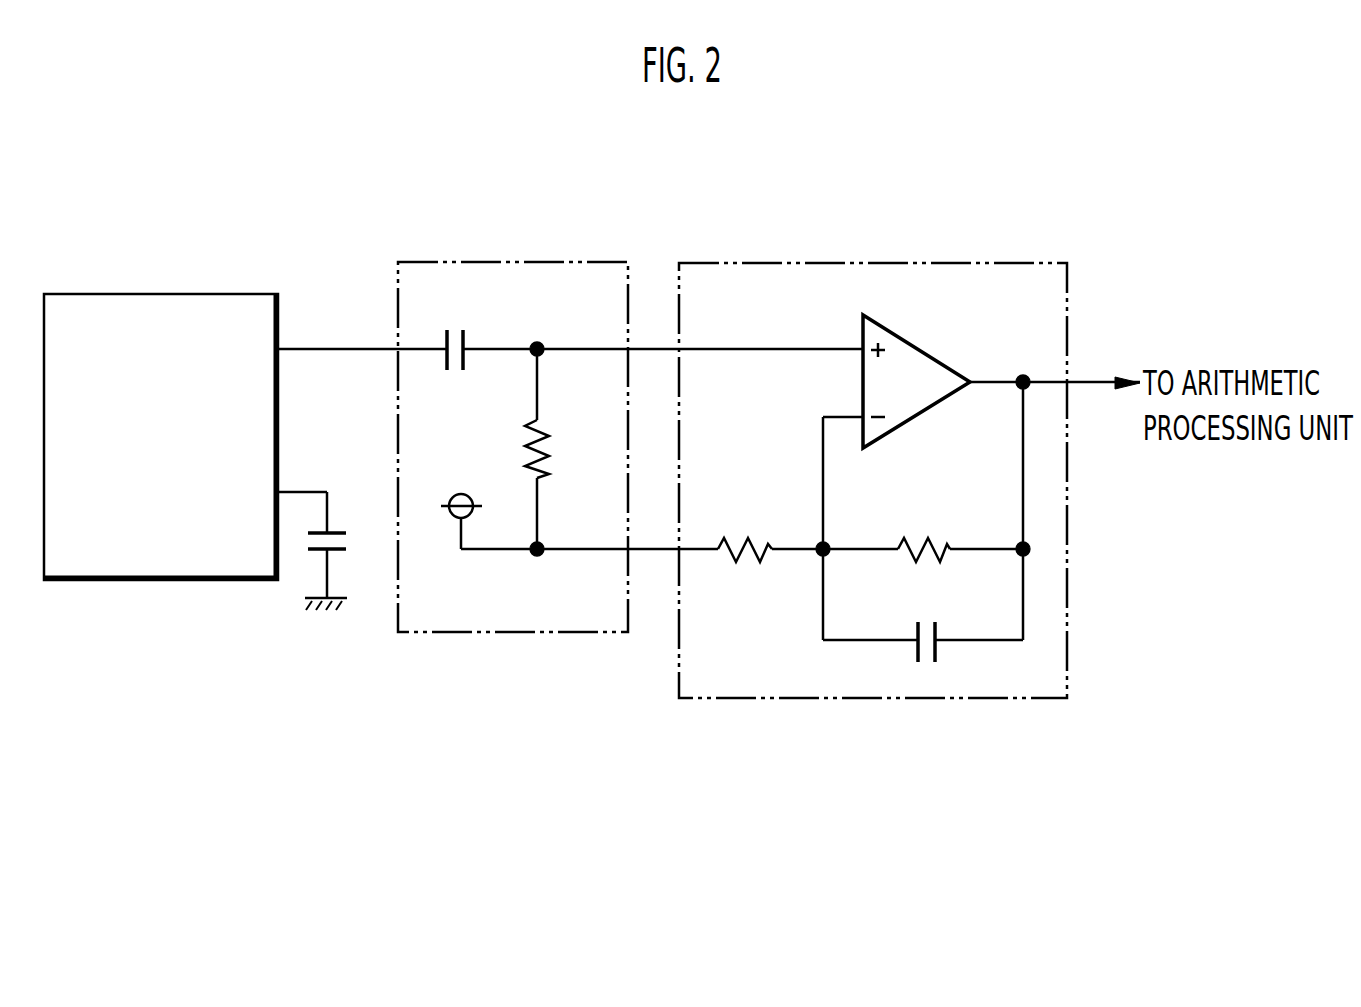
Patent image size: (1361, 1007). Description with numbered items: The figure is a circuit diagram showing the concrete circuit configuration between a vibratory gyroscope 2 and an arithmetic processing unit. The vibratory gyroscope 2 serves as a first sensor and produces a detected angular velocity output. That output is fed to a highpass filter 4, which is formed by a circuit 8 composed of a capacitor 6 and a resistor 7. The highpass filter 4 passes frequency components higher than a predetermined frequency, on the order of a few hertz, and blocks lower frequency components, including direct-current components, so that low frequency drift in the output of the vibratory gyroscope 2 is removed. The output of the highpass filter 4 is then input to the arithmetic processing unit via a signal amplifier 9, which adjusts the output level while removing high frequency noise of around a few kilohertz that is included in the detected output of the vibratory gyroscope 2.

The vibratory gyroscope 2 is at (190, 293).
The highpass filter 4 is at (507, 251).
The capacitor 6 is at (455, 326).
The resistor 7 is at (548, 450).
The circuit 8 is at (580, 260).
The signal amplifier 9 is at (915, 262).